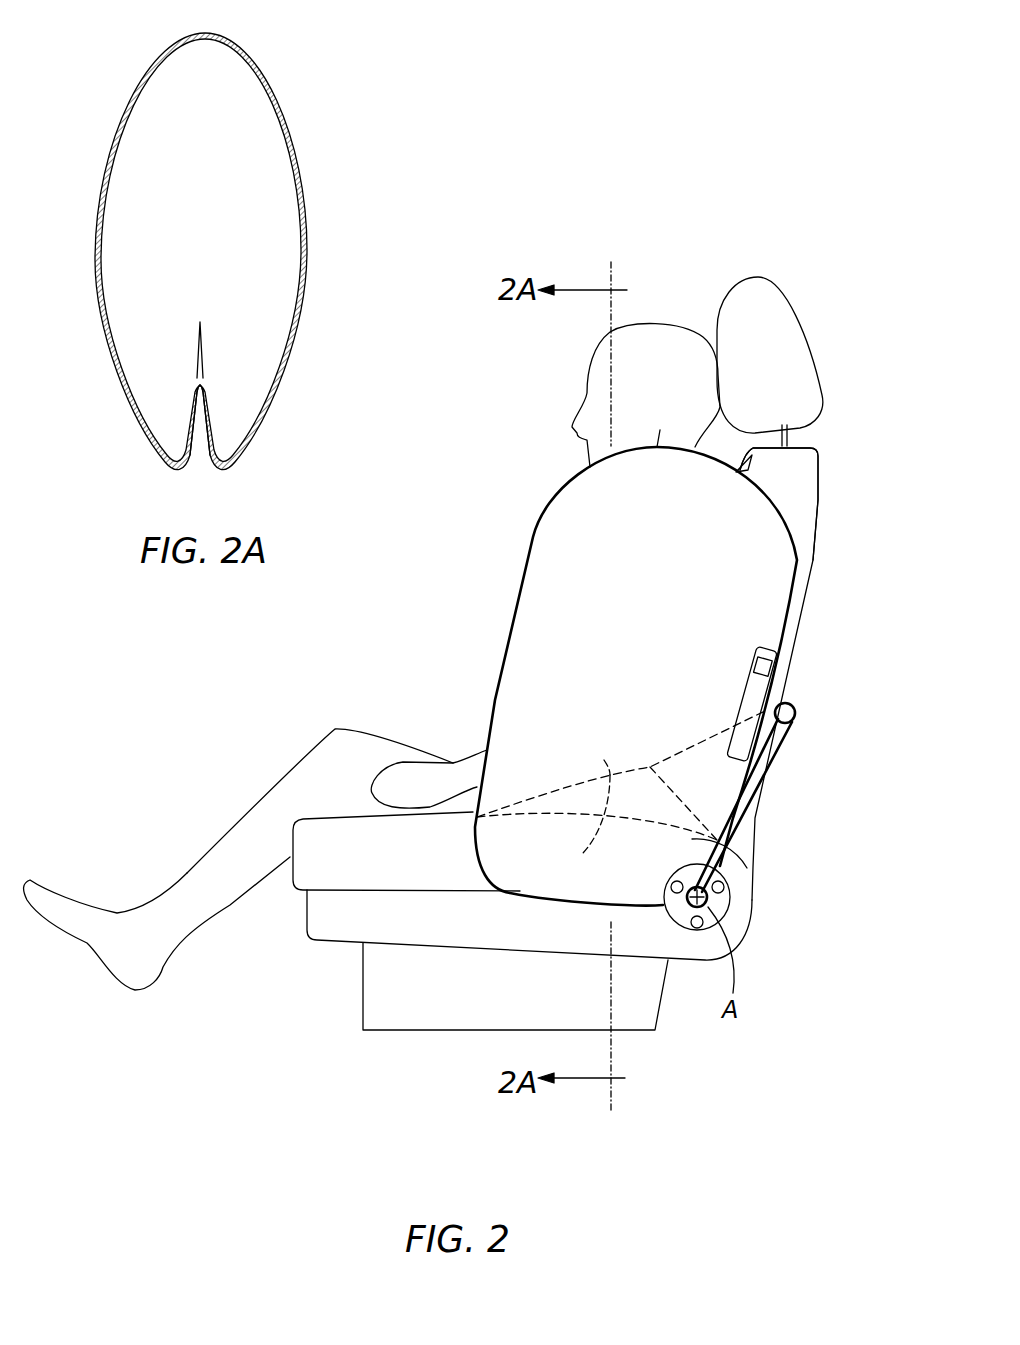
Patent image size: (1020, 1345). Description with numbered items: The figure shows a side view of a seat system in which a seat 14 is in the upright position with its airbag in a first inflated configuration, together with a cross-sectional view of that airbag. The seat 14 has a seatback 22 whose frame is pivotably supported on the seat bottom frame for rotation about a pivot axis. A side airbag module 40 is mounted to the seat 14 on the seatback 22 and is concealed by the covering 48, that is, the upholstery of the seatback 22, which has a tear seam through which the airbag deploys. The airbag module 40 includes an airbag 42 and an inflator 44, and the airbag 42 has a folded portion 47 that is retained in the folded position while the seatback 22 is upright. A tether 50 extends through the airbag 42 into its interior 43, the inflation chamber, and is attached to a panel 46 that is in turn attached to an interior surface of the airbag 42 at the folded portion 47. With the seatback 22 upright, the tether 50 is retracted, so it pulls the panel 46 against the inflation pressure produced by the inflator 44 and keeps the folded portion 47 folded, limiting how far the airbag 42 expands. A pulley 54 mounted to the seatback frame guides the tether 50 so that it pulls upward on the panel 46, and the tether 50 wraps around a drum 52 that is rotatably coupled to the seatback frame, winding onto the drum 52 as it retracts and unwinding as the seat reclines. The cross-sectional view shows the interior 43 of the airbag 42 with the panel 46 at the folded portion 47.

In FIG. 2, the seat 14 is at (822, 434).
In FIG. 2, the seatback 22 is at (818, 507).
In FIG. 2, the airbag module 40 is at (804, 693).
In FIG. 2, the airbag 42 is at (513, 625).
In FIG. 2A, the interior 43 is at (201, 251).
In FIG. 2, the interior 43 is at (622, 690).
In FIG. 2, the inflator 44 is at (782, 675).
In FIG. 2A, the panel 46 is at (204, 342).
In FIG. 2, the panel 46 is at (604, 760).
In FIG. 2A, the folded portion 47 is at (217, 403).
In FIG. 2, the folded portion 47 is at (582, 851).
In FIG. 2, the covering 48 is at (818, 478).
In FIG. 2, the tether 50 is at (777, 757).
In FIG. 2, the drum 52 is at (712, 900).
In FIG. 2, the pulley 54 is at (792, 723).